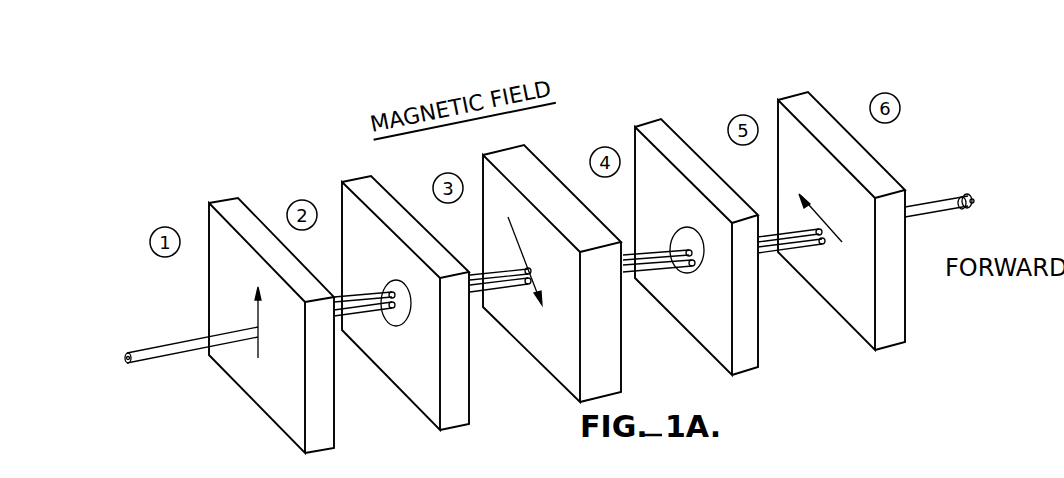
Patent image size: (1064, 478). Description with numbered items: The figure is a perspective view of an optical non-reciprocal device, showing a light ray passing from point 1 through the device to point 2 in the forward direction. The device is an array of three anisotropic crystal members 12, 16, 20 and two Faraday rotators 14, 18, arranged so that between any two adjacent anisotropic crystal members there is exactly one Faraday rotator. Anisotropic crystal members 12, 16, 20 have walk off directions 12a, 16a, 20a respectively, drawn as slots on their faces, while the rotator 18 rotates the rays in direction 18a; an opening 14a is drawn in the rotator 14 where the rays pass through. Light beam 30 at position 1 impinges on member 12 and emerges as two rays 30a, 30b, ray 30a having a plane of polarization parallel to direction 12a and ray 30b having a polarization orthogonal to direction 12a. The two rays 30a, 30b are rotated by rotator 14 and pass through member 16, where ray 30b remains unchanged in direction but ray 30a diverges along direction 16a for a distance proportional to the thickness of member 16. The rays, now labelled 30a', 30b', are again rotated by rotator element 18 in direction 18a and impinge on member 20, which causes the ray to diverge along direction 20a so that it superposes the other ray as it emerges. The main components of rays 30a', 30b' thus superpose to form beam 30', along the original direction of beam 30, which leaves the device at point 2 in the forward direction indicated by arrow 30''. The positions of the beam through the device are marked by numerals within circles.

The position 1 is at (115, 361).
The point 2 is at (977, 201).
The anisotropic crystal member 12 is at (209, 203).
The walk off direction 12a is at (258, 312).
The Faraday rotator 14 is at (342, 182).
The opening in second magnet plate 14a is at (400, 281).
The anisotropic crystal member 16 is at (483, 155).
The walk off direction 16a is at (527, 255).
The Faraday rotator 18 is at (635, 127).
The rotation direction 18a is at (693, 228).
The anisotropic crystal member 20 is at (778, 100).
The walk off direction 20a is at (820, 217).
The light beam 30 is at (182, 344).
The ray 30a is at (561, 260).
The ray 30b is at (440, 315).
The ray 30a' is at (762, 275).
The ray 30b' is at (710, 222).
The beam 30' is at (946, 189).
The arrow 30'' is at (986, 220).